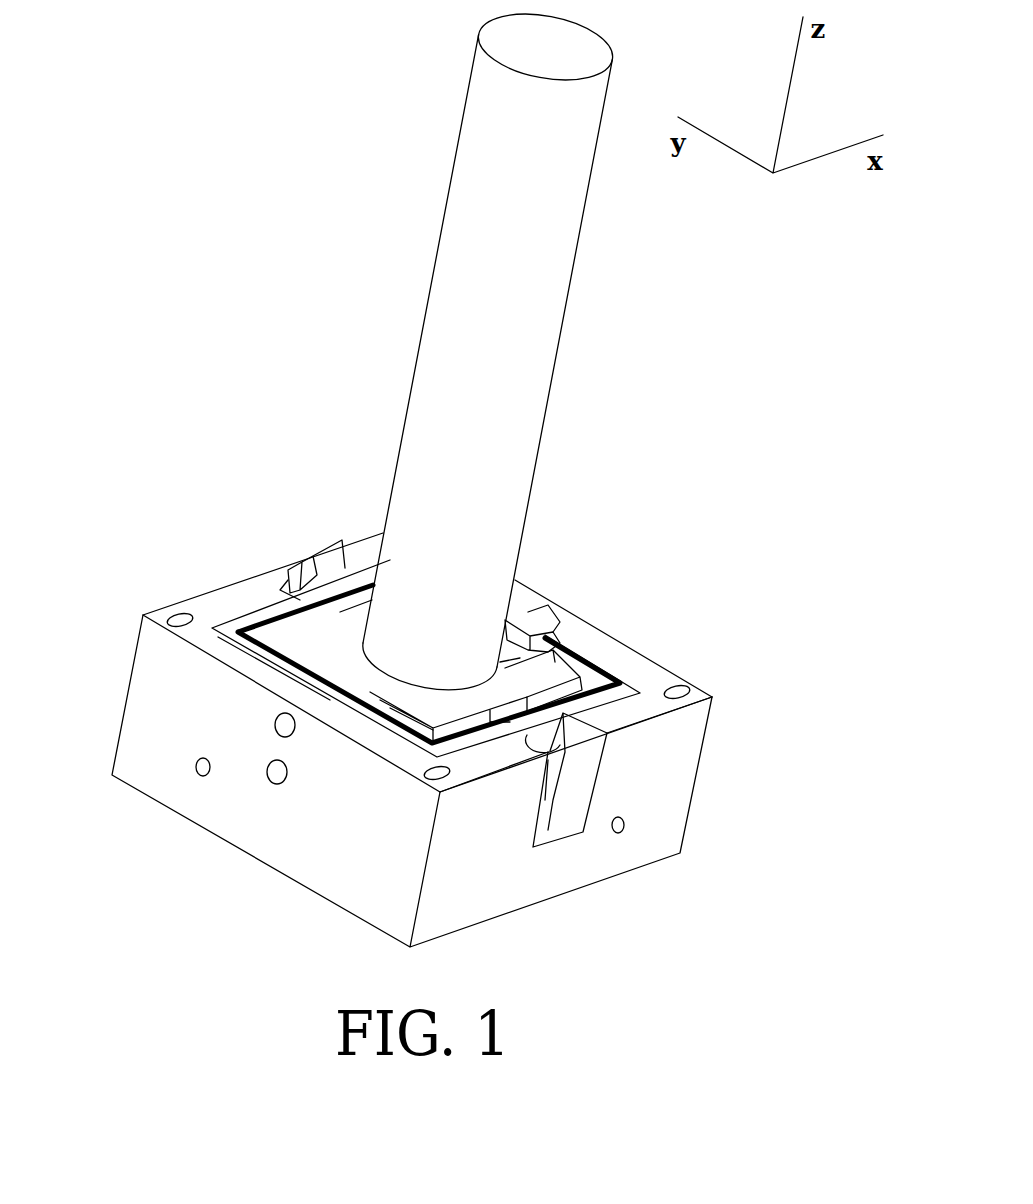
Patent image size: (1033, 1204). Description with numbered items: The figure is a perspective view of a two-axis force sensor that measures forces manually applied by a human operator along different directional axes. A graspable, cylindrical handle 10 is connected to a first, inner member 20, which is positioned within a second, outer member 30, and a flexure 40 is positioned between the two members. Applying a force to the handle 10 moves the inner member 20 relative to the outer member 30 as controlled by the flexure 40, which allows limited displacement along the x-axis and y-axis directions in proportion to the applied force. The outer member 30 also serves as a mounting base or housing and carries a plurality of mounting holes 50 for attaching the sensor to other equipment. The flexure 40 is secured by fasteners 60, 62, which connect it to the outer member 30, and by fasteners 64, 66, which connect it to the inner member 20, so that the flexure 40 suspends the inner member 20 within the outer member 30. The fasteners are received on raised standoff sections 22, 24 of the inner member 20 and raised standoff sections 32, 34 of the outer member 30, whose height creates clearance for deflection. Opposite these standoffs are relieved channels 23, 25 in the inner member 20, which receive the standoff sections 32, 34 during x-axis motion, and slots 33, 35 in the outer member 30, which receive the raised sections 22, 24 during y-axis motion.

The handle 10 is at (473, 356).
The inner member 20 is at (330, 635).
The raised section 22 is at (513, 713).
The recessed channel 23 is at (405, 696).
The raised section 24 is at (342, 613).
The recessed channel 25 is at (503, 664).
The outer member 30 is at (198, 703).
The raised section 32 is at (322, 700).
The slot 33 is at (550, 826).
The raised section 34 is at (512, 627).
The slot 35 is at (313, 576).
The flexure 40 is at (562, 642).
The mounting holes 50 is at (674, 690).
The fastener 60 is at (552, 800).
The fastener 62 is at (293, 593).
The fastener 64 is at (362, 632).
The fastener 66 is at (545, 617).